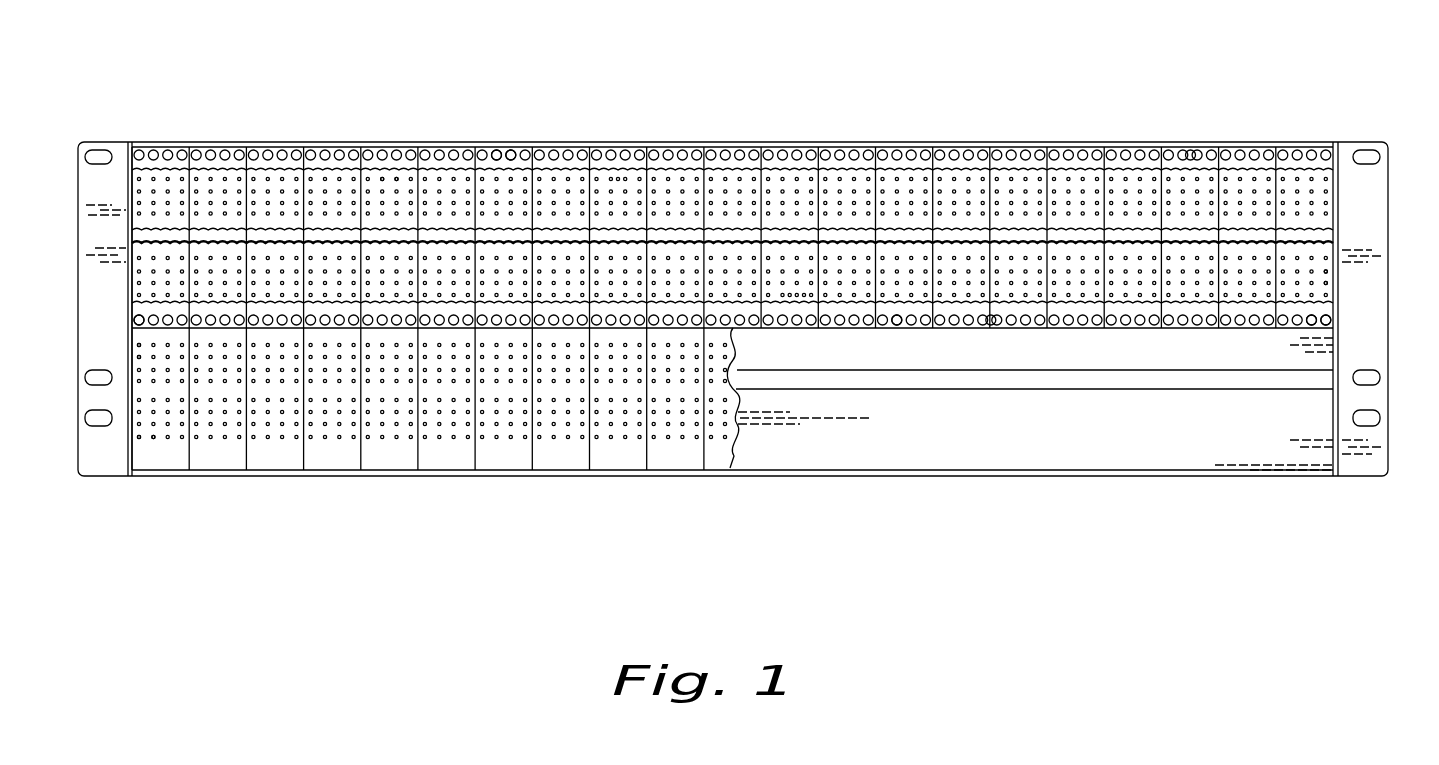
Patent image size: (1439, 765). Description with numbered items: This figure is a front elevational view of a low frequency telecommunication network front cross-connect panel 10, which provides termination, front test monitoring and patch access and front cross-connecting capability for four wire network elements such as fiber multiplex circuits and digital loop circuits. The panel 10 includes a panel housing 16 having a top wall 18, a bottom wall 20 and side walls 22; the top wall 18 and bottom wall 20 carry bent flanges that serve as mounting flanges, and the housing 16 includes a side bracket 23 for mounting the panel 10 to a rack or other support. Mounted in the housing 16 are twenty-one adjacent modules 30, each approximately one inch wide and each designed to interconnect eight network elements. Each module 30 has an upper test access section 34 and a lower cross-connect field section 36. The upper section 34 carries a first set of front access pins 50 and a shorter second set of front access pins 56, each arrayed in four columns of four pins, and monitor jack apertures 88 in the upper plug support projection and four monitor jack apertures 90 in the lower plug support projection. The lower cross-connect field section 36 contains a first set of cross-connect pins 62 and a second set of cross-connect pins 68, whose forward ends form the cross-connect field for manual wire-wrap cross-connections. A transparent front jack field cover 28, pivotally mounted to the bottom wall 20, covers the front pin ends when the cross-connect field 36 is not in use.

The cross-connect panel 10 is at (840, 41).
The panel housing 16 is at (1059, 141).
The top wall 18 is at (1189, 150).
The bottom wall 20 is at (618, 478).
The side walls 22 is at (128, 188).
The side bracket 23 is at (100, 238).
The front jack field cover 28 is at (1062, 446).
The module 30 is at (262, 183).
The upper test access section 34 is at (619, 176).
The lower cross-connect field section 36 is at (500, 453).
The first set of front access pins 50 is at (399, 180).
The second set of front access pins 56 is at (806, 297).
The first set of cross-connect pins 62 is at (138, 356).
The second set of cross-connect pins 68 is at (153, 440).
The monitor jack apertures 88 is at (510, 151).
The monitor jack apertures 90 is at (138, 321).